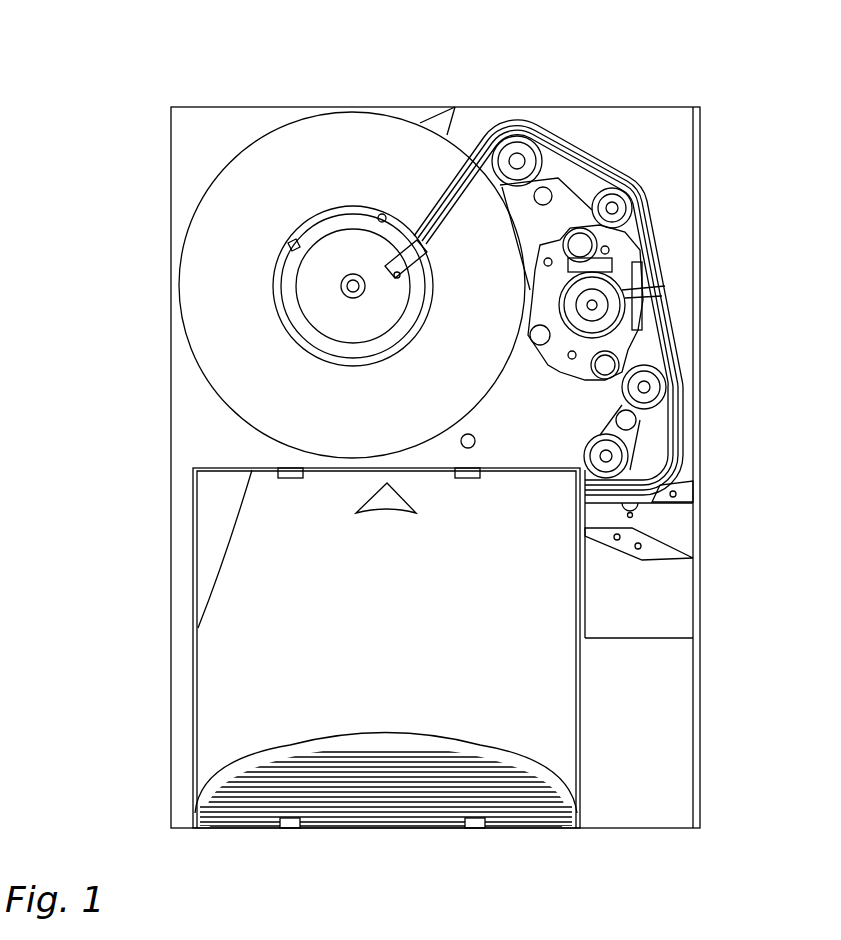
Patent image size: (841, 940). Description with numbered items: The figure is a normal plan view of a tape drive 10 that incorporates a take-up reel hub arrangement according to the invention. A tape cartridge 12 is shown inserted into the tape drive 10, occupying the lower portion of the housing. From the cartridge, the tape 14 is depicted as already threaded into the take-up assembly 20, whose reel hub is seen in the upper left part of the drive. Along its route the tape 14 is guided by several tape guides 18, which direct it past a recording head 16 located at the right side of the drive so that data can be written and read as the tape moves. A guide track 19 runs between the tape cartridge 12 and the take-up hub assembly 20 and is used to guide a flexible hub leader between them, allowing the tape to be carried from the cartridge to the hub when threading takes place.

The tape drive 10 is at (138, 504).
The tape cartridge 12 is at (359, 678).
The tape 14 is at (647, 448).
The recording head 16 is at (665, 283).
The tape guides 18 is at (530, 145).
The guide track 19 is at (460, 150).
The take-up assembly 20 is at (323, 262).